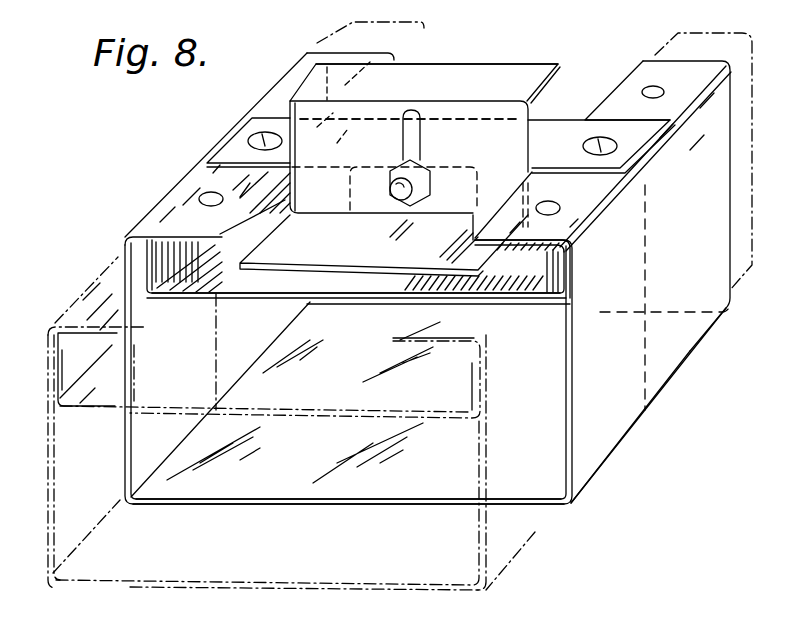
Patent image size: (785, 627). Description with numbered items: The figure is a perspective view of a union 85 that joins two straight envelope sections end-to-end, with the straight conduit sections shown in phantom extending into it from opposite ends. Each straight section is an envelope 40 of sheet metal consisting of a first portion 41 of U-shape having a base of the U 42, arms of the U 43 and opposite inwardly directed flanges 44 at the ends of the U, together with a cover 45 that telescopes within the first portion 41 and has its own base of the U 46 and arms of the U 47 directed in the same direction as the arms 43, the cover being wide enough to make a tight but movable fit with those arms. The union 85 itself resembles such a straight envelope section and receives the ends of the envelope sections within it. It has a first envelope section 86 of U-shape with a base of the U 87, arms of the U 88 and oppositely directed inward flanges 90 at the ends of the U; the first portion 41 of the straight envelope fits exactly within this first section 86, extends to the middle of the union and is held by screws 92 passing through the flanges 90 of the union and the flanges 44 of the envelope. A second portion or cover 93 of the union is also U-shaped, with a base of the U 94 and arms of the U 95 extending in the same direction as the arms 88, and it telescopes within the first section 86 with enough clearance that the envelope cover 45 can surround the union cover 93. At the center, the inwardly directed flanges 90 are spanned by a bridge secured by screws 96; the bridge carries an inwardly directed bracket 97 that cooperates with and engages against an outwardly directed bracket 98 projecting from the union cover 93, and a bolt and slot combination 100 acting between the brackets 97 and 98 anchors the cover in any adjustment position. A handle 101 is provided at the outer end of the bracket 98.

The envelope 40 is at (496, 566).
The first portion 41 is at (513, 527).
The base of the U 42 is at (307, 590).
The arms of the U 43 is at (50, 482).
The inwardly directed flanges 44 is at (78, 320).
The cover 45 is at (193, 378).
The base of the U 46 is at (326, 382).
The arms of the U 47 is at (472, 389).
The union 85 is at (675, 336).
The first envelope section 86 is at (645, 400).
The base of the U 87 is at (350, 504).
The arms of the U 88 is at (565, 353).
The inward flanges 90 is at (587, 183).
The screws 92 is at (561, 210).
The cover 93 is at (233, 295).
The base of the U 94 is at (362, 302).
The arms of the U 95 is at (145, 260).
The screws 96 is at (618, 147).
The inwardly directed bracket 97 is at (482, 160).
The outwardly directed bracket 98 is at (378, 132).
The bolt and slot combination 100 is at (418, 187).
The handle 101 is at (510, 72).